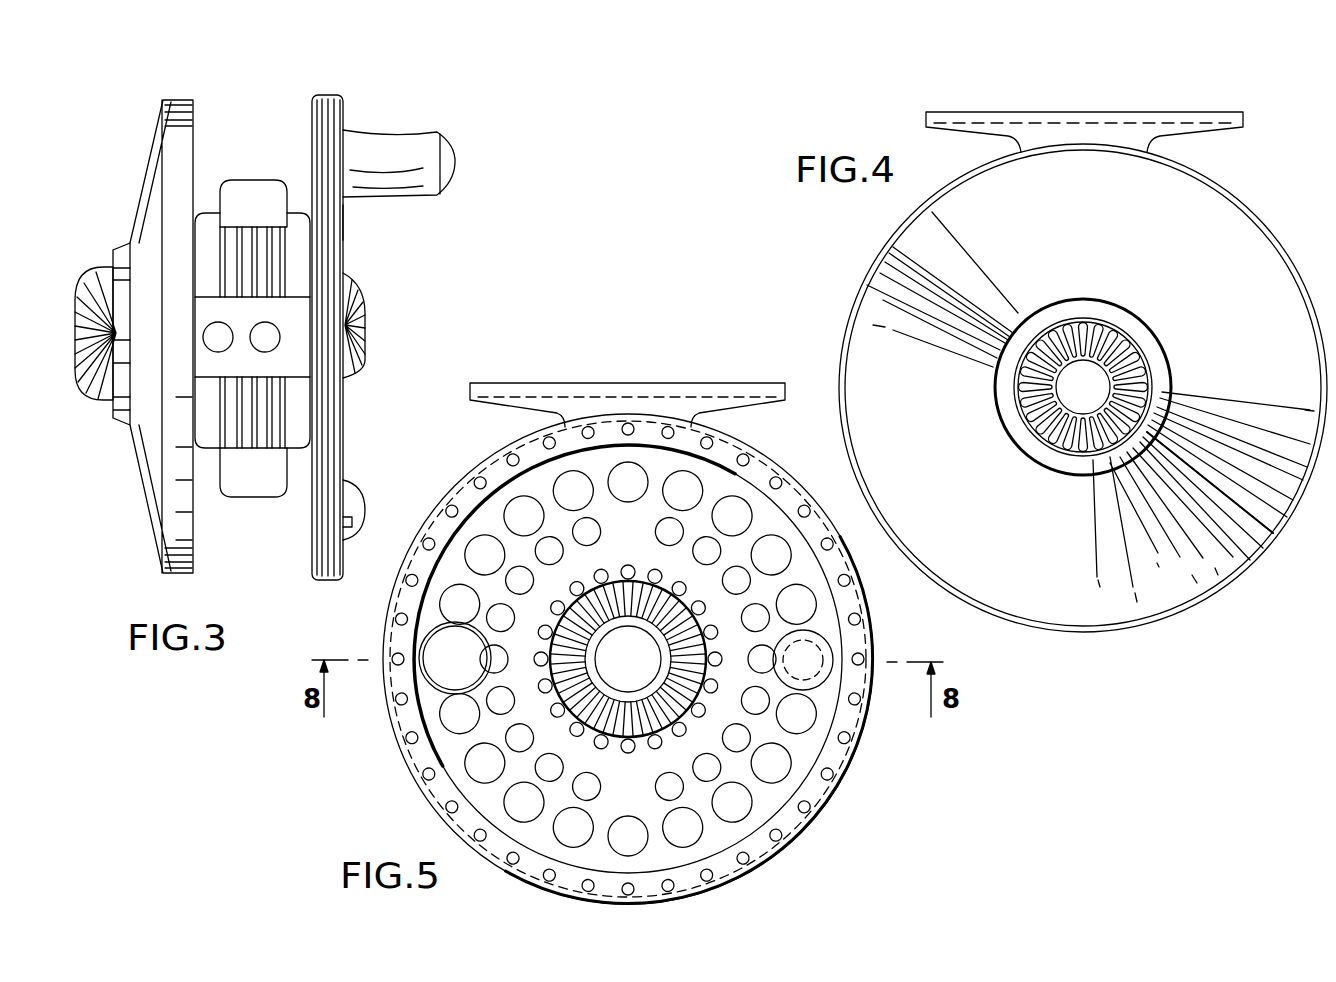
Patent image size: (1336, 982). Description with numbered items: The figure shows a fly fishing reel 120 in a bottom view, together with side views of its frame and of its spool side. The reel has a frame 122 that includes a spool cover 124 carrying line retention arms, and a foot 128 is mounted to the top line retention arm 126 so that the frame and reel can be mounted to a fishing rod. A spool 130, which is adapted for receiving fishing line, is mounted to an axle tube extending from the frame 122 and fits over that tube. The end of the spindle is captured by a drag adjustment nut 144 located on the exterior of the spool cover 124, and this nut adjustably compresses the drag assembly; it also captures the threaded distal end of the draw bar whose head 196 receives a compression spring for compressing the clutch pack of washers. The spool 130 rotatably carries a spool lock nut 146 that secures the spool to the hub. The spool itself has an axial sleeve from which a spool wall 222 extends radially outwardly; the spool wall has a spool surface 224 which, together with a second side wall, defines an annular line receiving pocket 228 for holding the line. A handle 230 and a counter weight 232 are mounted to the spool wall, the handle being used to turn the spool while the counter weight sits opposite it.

In FIG. 3, the fly fishing reel 120 is at (488, 126).
In FIG. 4, the fly fishing reel 120 is at (1213, 613).
In FIG. 5, the fly fishing reel 120 is at (937, 750).
In FIG. 3, the frame 122 is at (132, 443).
In FIG. 4, the frame 122 is at (1283, 240).
In FIG. 3, the spool cover 124 is at (152, 538).
In FIG. 4, the spool cover 124 is at (900, 287).
In FIG. 3, the top line retention arm 126 is at (297, 363).
In FIG. 3, the foot 128 is at (255, 187).
In FIG. 4, the foot 128 is at (1223, 118).
In FIG. 5, the foot 128 is at (735, 383).
In FIG. 3, the spool 130 is at (308, 498).
In FIG. 5, the spool 130 is at (812, 827).
In FIG. 3, the drag adjustment nut 144 is at (83, 283).
In FIG. 4, the drag adjustment nut 144 is at (1112, 453).
In FIG. 3, the spool lock nut 146 is at (345, 293).
In FIG. 5, the spool lock nut 146 is at (588, 604).
In FIG. 5, the head 196 is at (632, 672).
In FIG. 3, the spool wall 222 is at (347, 222).
In FIG. 5, the spool wall 222 is at (757, 525).
In FIG. 3, the spool surface 224 is at (250, 427).
In FIG. 3, the annular line receiving pocket 228 is at (200, 213).
In FIG. 3, the handle 230 is at (390, 133).
In FIG. 5, the handle 230 is at (433, 648).
In FIG. 3, the counter weight 232 is at (360, 523).
In FIG. 5, the counter weight 232 is at (807, 658).